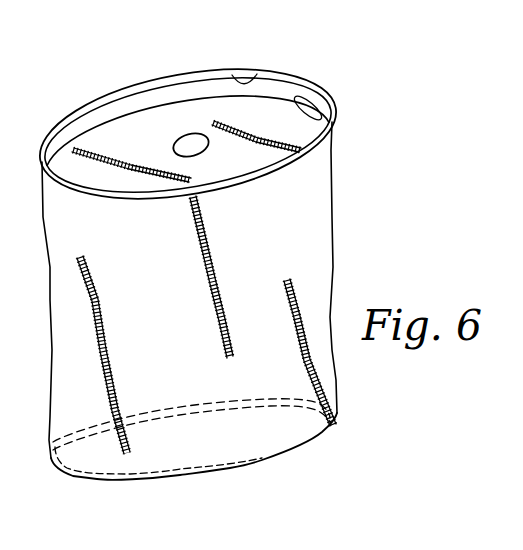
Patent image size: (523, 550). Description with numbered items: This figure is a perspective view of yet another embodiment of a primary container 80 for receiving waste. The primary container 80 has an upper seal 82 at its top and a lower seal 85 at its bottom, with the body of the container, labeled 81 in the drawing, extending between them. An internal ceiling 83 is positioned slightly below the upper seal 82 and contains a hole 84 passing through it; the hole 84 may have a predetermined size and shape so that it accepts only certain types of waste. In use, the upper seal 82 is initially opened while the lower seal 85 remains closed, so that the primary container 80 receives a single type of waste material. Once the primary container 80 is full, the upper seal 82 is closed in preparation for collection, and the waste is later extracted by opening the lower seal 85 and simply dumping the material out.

The primary container 80 is at (117, 485).
The bag side wall 81 is at (331, 182).
The upper seal 82 is at (262, 74).
The internal ceiling 83 is at (110, 130).
The hole 84 is at (190, 144).
The lower seal 85 is at (285, 400).